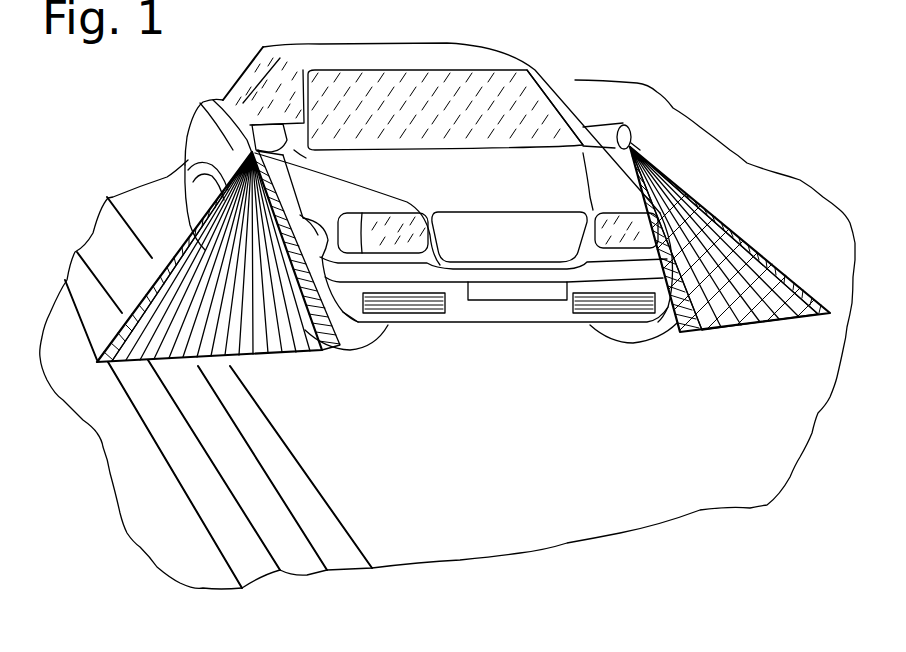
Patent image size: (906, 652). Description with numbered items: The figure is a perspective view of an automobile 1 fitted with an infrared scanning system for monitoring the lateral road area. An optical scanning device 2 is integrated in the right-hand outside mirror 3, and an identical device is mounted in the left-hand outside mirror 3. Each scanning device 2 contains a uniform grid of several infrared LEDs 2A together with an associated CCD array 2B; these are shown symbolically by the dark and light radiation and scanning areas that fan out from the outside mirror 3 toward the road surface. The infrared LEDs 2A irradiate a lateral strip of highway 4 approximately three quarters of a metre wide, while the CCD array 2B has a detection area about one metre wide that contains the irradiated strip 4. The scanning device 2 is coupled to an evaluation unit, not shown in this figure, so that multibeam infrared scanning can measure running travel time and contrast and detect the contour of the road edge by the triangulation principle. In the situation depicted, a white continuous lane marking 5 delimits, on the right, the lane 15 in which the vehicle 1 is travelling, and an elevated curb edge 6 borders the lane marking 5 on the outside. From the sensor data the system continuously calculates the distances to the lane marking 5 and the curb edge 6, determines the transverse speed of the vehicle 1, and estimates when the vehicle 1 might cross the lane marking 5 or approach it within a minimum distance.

The automobile 1 is at (517, 92).
The optical scanning device 2 is at (246, 110).
The infrared LEDs 2A is at (248, 152).
The CCD array 2B is at (300, 155).
The outside mirror 3 is at (257, 151).
The lateral strip of highway 4 is at (212, 377).
The white lane marking 5 is at (332, 537).
The curb edge 6 is at (240, 540).
The lane 15 is at (528, 385).